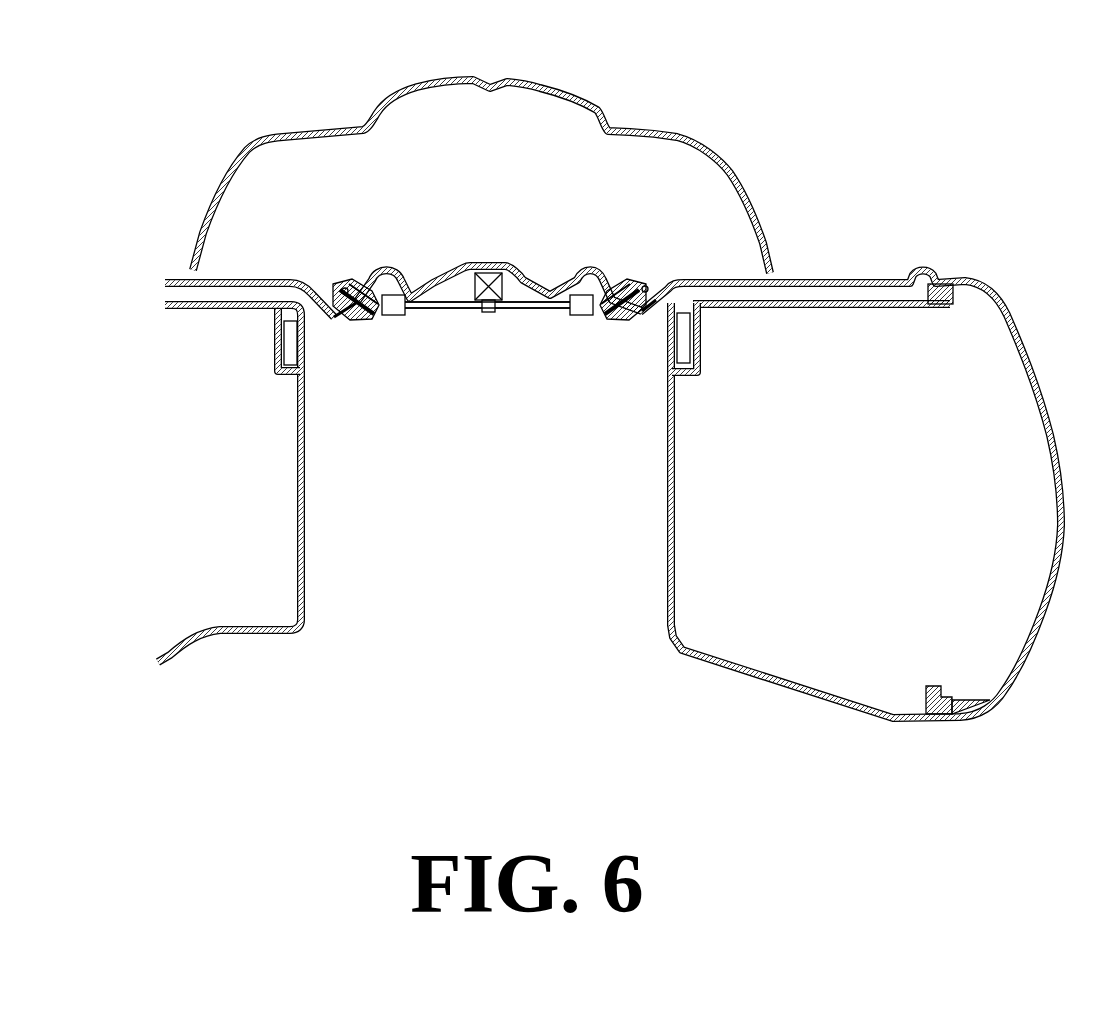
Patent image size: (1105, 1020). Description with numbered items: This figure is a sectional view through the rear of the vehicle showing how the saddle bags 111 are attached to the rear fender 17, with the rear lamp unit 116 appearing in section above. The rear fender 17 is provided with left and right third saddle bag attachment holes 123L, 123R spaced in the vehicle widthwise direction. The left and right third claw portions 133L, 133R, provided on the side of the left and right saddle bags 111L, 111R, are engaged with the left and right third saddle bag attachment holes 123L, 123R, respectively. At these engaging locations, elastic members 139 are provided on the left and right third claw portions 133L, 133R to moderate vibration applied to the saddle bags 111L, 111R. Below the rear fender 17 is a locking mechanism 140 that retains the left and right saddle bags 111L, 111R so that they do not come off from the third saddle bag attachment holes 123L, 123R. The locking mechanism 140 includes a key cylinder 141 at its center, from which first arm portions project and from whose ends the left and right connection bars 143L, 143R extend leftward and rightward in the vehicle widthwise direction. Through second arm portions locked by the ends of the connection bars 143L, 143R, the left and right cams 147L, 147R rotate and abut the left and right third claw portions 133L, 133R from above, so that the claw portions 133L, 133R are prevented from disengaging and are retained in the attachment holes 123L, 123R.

The rear lamp unit 116 is at (707, 142).
The saddle bag 111 is at (609, 529).
The right saddle bag 111R is at (228, 648).
The left saddle bag 111L is at (750, 683).
The rear fender 17 is at (541, 282).
The elastic member 139 is at (345, 288).
The right third saddle bag attachment hole 123R is at (352, 283).
The left third saddle bag attachment hole 123L is at (612, 283).
The key cylinder 141 is at (487, 271).
The locking mechanism 140 is at (488, 315).
The right connection bar 143R is at (442, 310).
The left connection bar 143L is at (530, 310).
The right cam 147R is at (396, 318).
The left cam 147L is at (575, 318).
The right third claw portion 133R is at (380, 317).
The left third claw portion 133L is at (597, 317).